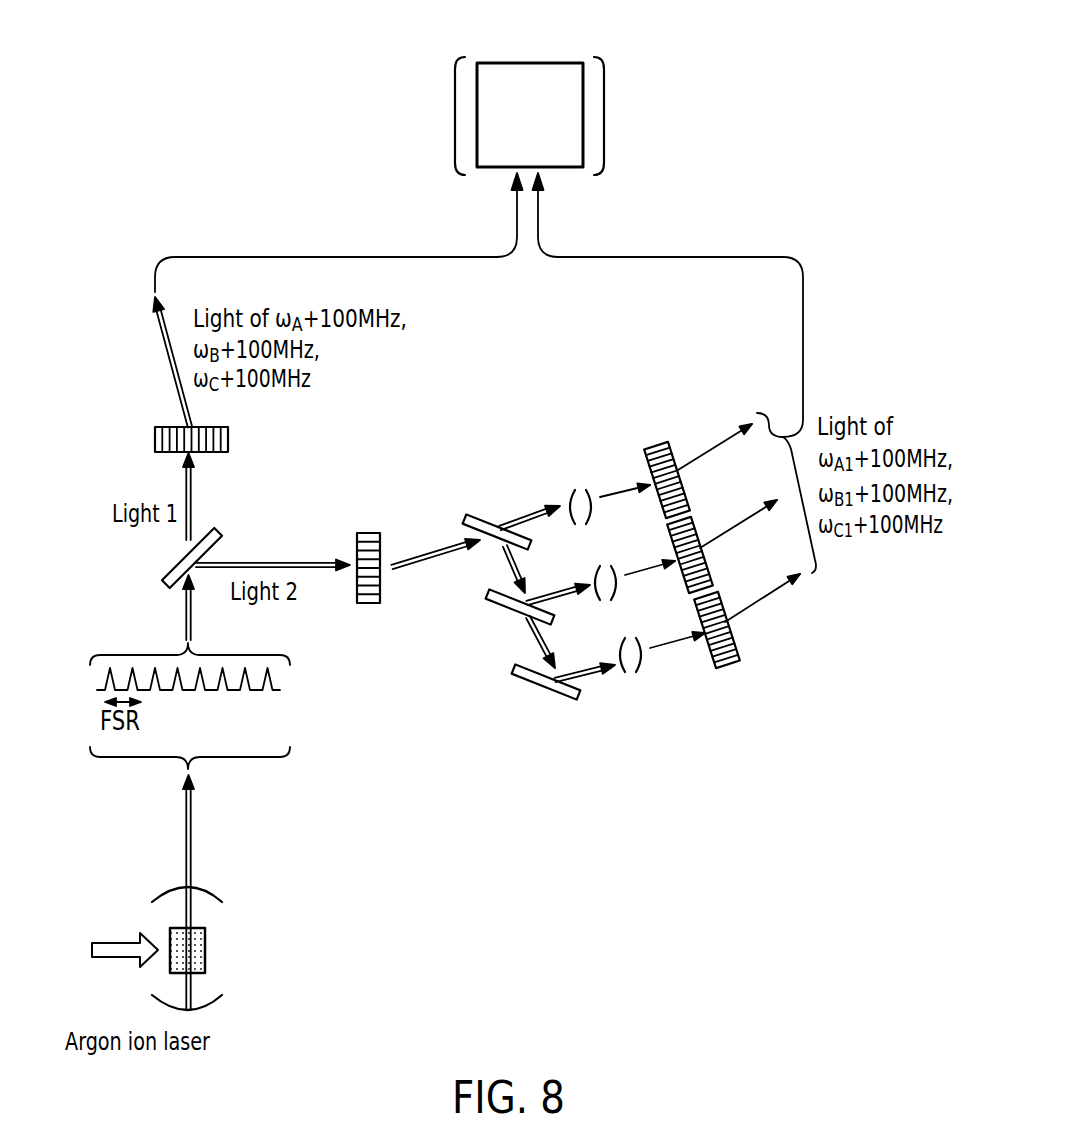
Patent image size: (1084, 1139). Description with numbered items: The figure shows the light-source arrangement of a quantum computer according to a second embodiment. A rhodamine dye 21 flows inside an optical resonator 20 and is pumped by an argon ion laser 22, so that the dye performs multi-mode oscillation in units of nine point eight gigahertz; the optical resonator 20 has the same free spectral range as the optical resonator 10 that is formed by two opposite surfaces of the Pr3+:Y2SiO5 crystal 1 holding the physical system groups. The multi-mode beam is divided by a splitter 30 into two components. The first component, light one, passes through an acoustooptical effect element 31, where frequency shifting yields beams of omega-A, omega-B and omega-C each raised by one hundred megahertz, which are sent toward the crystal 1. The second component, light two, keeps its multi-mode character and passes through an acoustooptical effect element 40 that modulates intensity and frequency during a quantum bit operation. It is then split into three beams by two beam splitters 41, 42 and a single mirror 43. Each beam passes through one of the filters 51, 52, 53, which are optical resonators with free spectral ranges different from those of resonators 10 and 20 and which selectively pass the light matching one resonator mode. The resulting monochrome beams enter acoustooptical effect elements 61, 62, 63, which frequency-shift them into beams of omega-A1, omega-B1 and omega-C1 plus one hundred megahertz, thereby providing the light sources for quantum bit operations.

The Pr3+:Y2SiO5 crystal 1 is at (534, 62).
The optical resonator 10 is at (605, 75).
The optical resonator 20 is at (222, 893).
The dye (rhodamine) 21 is at (207, 950).
The argon ion laser 22 is at (114, 958).
The splitter 30 is at (210, 532).
The acoustooptical effect element 31 is at (153, 437).
The acoustooptical effect element 40 is at (369, 605).
The beam splitter 41 is at (482, 514).
The beam splitter 42 is at (496, 610).
The mirror 43 is at (539, 691).
The filter 51 is at (580, 489).
The filter 52 is at (619, 565).
The filter 53 is at (630, 677).
The acoustooptical effect element 61 is at (660, 442).
The acoustooptical effect element 62 is at (706, 558).
The acoustooptical effect element 63 is at (728, 667).